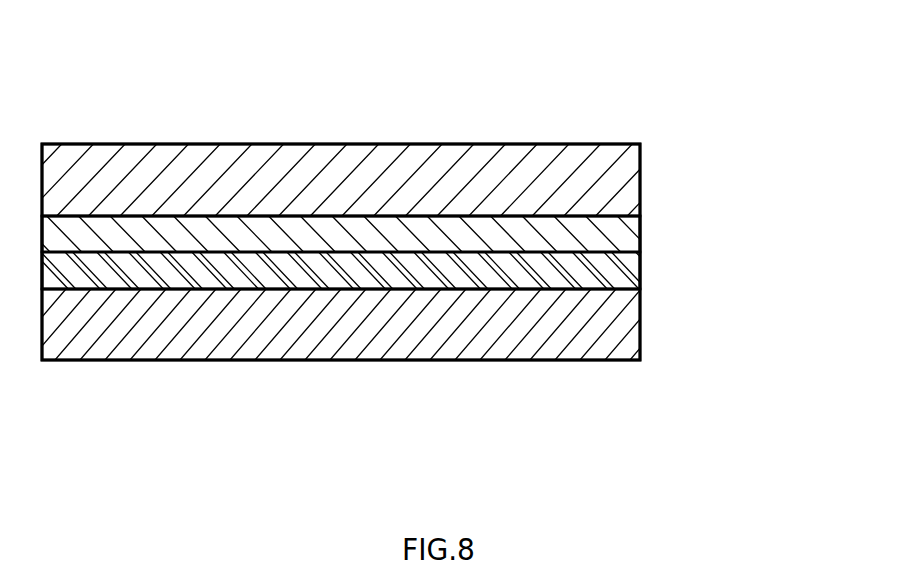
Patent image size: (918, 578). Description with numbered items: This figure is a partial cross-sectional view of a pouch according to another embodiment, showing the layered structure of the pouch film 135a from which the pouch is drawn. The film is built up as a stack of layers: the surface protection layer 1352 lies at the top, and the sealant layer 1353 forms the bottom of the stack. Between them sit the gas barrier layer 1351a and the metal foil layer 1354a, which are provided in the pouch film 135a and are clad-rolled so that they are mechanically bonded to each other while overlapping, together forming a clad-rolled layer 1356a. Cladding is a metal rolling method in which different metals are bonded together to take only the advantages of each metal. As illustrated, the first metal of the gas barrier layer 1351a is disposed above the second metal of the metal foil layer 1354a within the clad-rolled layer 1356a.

The pouch film 135a is at (340, 62).
The surface protection layer 1352 is at (640, 178).
The gas barrier layer 1351a is at (640, 233).
The metal foil layer 1354a is at (640, 270).
The sealant layer 1353 is at (640, 323).
The clad-rolled layer 1356a is at (763, 232).